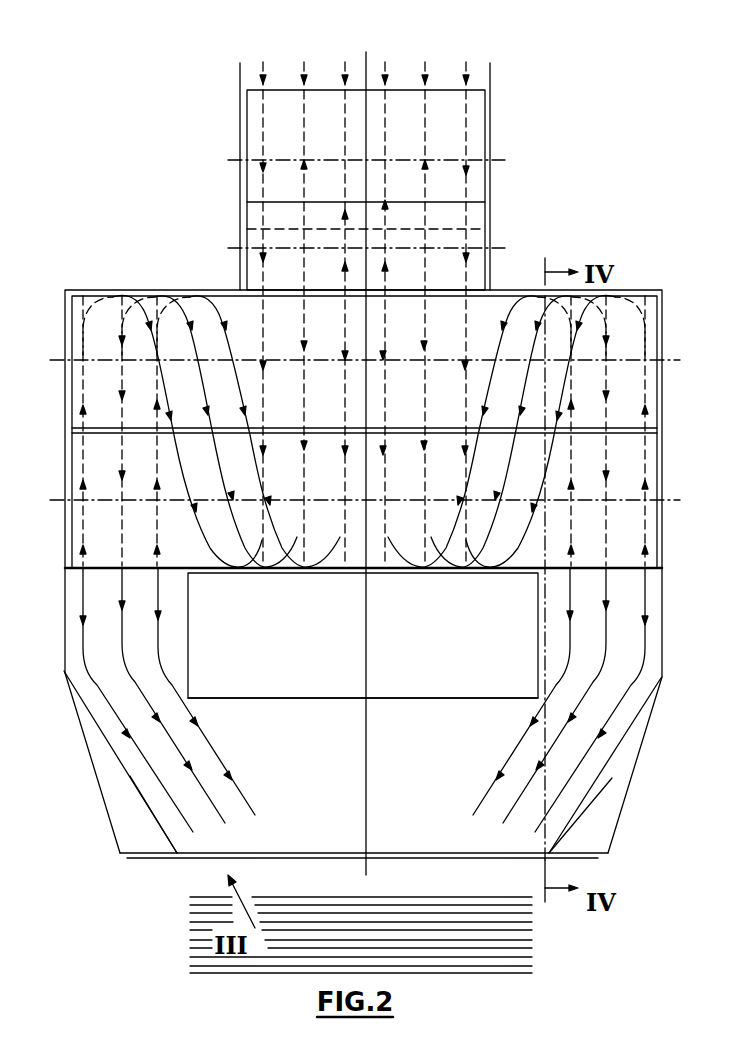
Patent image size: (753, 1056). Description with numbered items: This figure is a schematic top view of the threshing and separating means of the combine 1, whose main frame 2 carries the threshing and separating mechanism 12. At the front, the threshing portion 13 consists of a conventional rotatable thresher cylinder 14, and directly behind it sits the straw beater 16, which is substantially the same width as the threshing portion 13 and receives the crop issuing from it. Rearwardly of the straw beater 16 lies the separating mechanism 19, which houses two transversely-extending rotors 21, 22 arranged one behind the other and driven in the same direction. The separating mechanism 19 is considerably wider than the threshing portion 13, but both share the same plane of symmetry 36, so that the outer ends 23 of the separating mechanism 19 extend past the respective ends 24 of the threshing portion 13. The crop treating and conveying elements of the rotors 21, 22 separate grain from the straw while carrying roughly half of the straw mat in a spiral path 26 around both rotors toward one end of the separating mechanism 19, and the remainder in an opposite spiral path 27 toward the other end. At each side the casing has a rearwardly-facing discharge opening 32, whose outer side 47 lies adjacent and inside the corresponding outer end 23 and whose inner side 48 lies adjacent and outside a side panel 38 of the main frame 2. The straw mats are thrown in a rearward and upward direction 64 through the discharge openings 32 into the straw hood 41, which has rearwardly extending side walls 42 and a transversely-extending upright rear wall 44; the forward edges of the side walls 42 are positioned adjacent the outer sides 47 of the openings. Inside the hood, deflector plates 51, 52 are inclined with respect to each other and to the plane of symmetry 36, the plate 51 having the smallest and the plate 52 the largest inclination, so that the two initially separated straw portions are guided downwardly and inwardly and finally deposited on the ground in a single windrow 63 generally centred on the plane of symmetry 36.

The combine 1 is at (534, 260).
The main frame 2 is at (188, 660).
The threshing and separating mechanism 12 is at (192, 241).
The threshing portion 13 is at (192, 126).
The thresher cylinder 14 is at (283, 87).
The straw beater 16 is at (485, 248).
The separating mechanism 19 is at (51, 328).
The separating rotor 21 is at (644, 290).
The separating rotor 22 is at (661, 572).
The outer ends 23 is at (66, 531).
The ends 24 is at (240, 184).
The spiral path 26 is at (500, 505).
The opposite spiral path 27 is at (242, 548).
The discharge openings 32 is at (103, 578).
The plane of symmetry 36 is at (366, 862).
The side panels 38 is at (188, 688).
The straw hood 41 is at (75, 773).
The side walls 42 is at (64, 674).
The rear wall 44 is at (163, 857).
The outer sides 47 is at (64, 572).
The inner sides 48 is at (190, 577).
The deflector plate 51 is at (96, 731).
The deflector plate 52 is at (147, 807).
The windrow 63 is at (533, 974).
The rearward and upward direction 64 is at (120, 630).